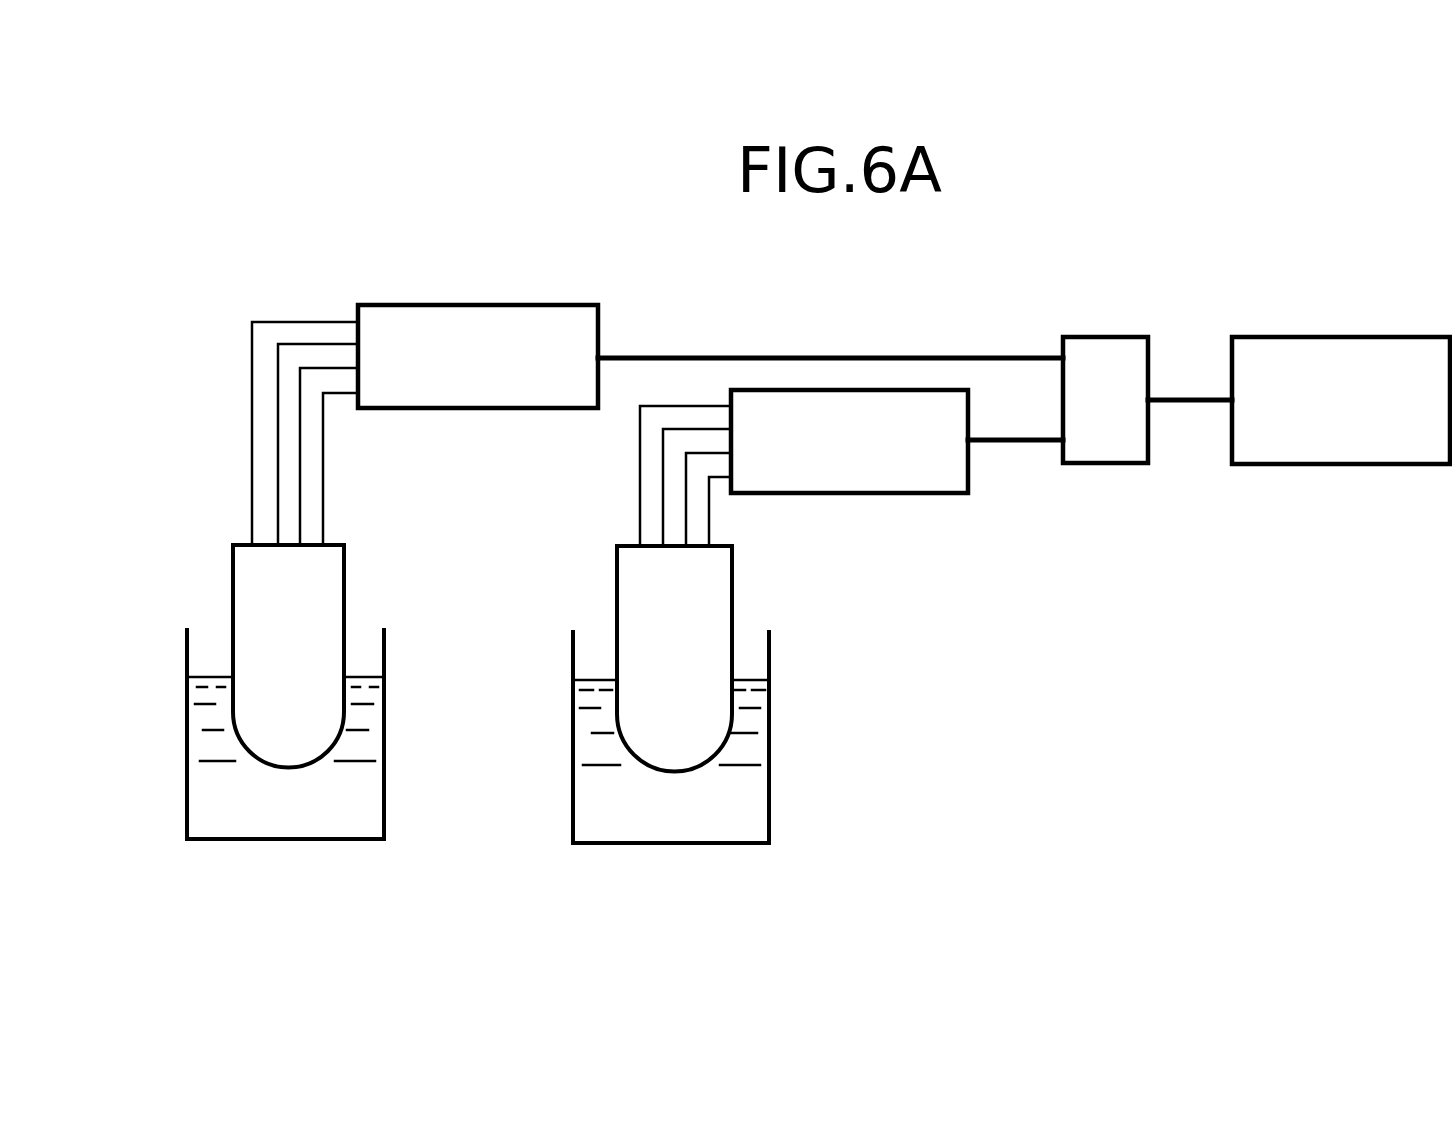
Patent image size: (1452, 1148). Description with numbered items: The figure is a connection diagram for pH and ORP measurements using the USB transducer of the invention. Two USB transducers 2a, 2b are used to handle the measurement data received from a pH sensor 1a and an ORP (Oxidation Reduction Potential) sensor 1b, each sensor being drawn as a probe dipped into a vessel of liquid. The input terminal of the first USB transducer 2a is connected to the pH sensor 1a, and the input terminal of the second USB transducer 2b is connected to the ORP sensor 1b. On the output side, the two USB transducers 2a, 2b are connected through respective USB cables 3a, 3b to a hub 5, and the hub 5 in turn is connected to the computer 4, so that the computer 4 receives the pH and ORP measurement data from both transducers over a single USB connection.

The pH sensor 1a is at (329, 582).
The ORP sensor 1b is at (730, 578).
The USB transducer 2a is at (502, 305).
The USB transducer 2b is at (885, 497).
The USB cable 3a is at (895, 357).
The USB cable 3b is at (1005, 445).
The computer 4 is at (1358, 337).
The hub 5 is at (1125, 332).